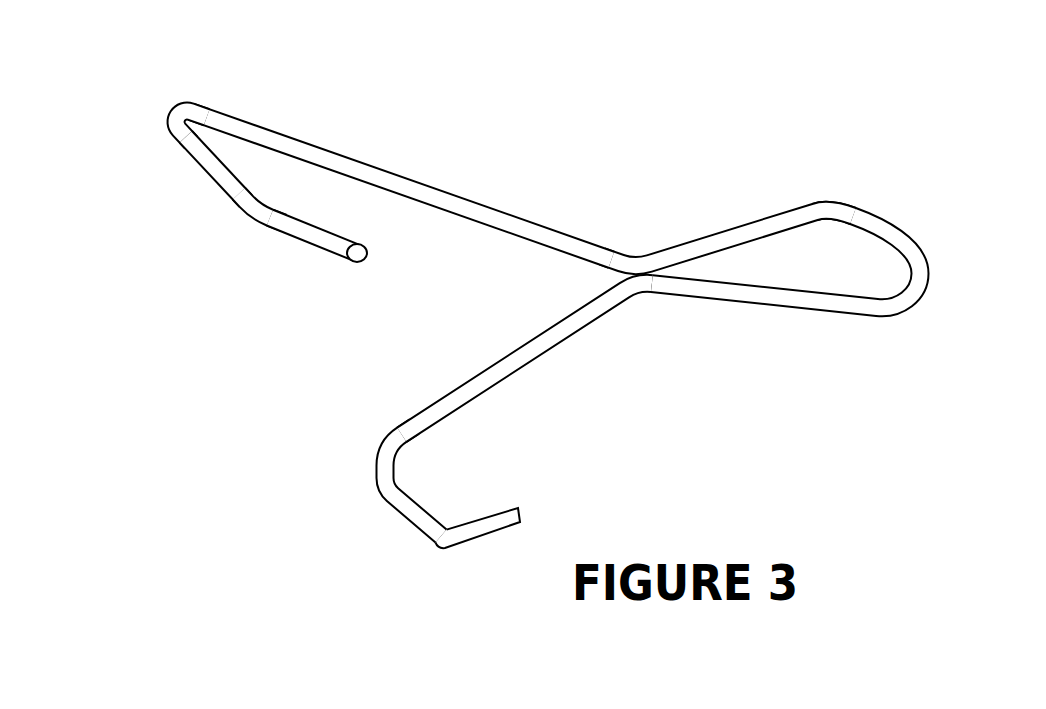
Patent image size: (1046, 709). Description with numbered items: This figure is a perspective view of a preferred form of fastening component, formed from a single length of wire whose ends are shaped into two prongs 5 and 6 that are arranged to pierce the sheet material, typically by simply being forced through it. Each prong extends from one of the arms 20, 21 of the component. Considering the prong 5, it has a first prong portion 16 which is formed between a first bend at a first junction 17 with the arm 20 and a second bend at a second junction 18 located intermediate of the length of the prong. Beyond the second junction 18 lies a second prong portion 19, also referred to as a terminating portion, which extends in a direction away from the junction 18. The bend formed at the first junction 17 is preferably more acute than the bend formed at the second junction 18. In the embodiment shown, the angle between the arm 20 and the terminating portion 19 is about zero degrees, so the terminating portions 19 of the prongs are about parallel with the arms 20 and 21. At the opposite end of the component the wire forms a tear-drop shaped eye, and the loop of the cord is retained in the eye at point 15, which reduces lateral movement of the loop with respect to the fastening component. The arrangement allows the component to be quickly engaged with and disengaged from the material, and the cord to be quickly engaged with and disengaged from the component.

The prong 5 is at (206, 191).
The prong 6 is at (381, 518).
The point 15 is at (911, 311).
The first prong portion 16 is at (235, 220).
The first junction 17 is at (169, 112).
The second junction 18 is at (252, 232).
The second prong portion 19 is at (357, 268).
The arm 20 is at (225, 100).
The arm 21 is at (630, 305).